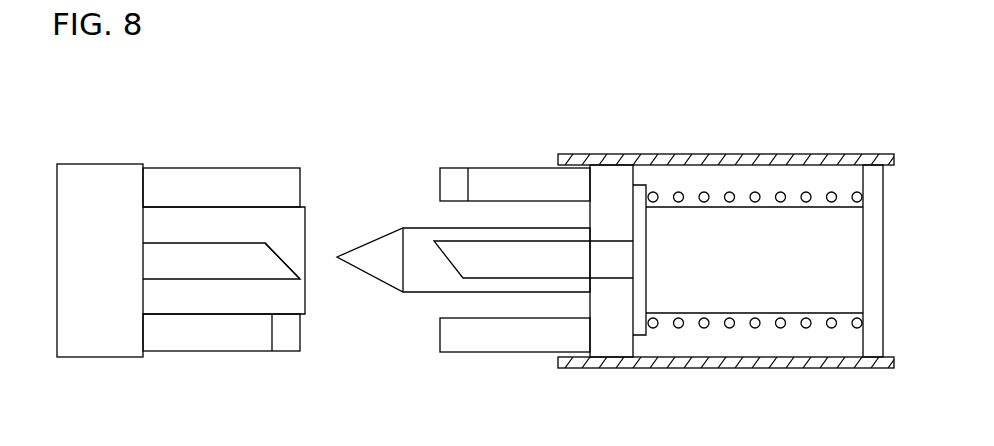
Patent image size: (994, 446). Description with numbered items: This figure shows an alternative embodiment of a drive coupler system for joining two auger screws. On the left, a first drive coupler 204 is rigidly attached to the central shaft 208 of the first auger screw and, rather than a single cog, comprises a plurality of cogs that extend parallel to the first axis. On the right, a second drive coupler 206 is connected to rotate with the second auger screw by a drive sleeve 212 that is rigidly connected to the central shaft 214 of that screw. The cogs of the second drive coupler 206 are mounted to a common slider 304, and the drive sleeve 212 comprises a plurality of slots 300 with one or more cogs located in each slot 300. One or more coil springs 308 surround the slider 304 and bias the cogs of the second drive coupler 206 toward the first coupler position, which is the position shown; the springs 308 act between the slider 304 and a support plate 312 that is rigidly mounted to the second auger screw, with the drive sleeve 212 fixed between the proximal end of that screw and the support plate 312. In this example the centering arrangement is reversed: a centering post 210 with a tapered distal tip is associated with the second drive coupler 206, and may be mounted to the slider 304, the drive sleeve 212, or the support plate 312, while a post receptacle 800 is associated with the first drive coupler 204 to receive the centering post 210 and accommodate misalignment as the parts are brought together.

The central shaft 208 is at (100, 168).
The first drive coupler 204 is at (268, 190).
The post receptacle 800 is at (297, 294).
The centering post 210 is at (418, 283).
The second drive coupler 206 is at (487, 180).
The slot 300 is at (607, 288).
The drive sleeve 212 is at (611, 185).
The central shaft 214 is at (672, 155).
The slider 304 is at (707, 283).
The coil spring 308 is at (755, 192).
The support plate 312 is at (875, 208).